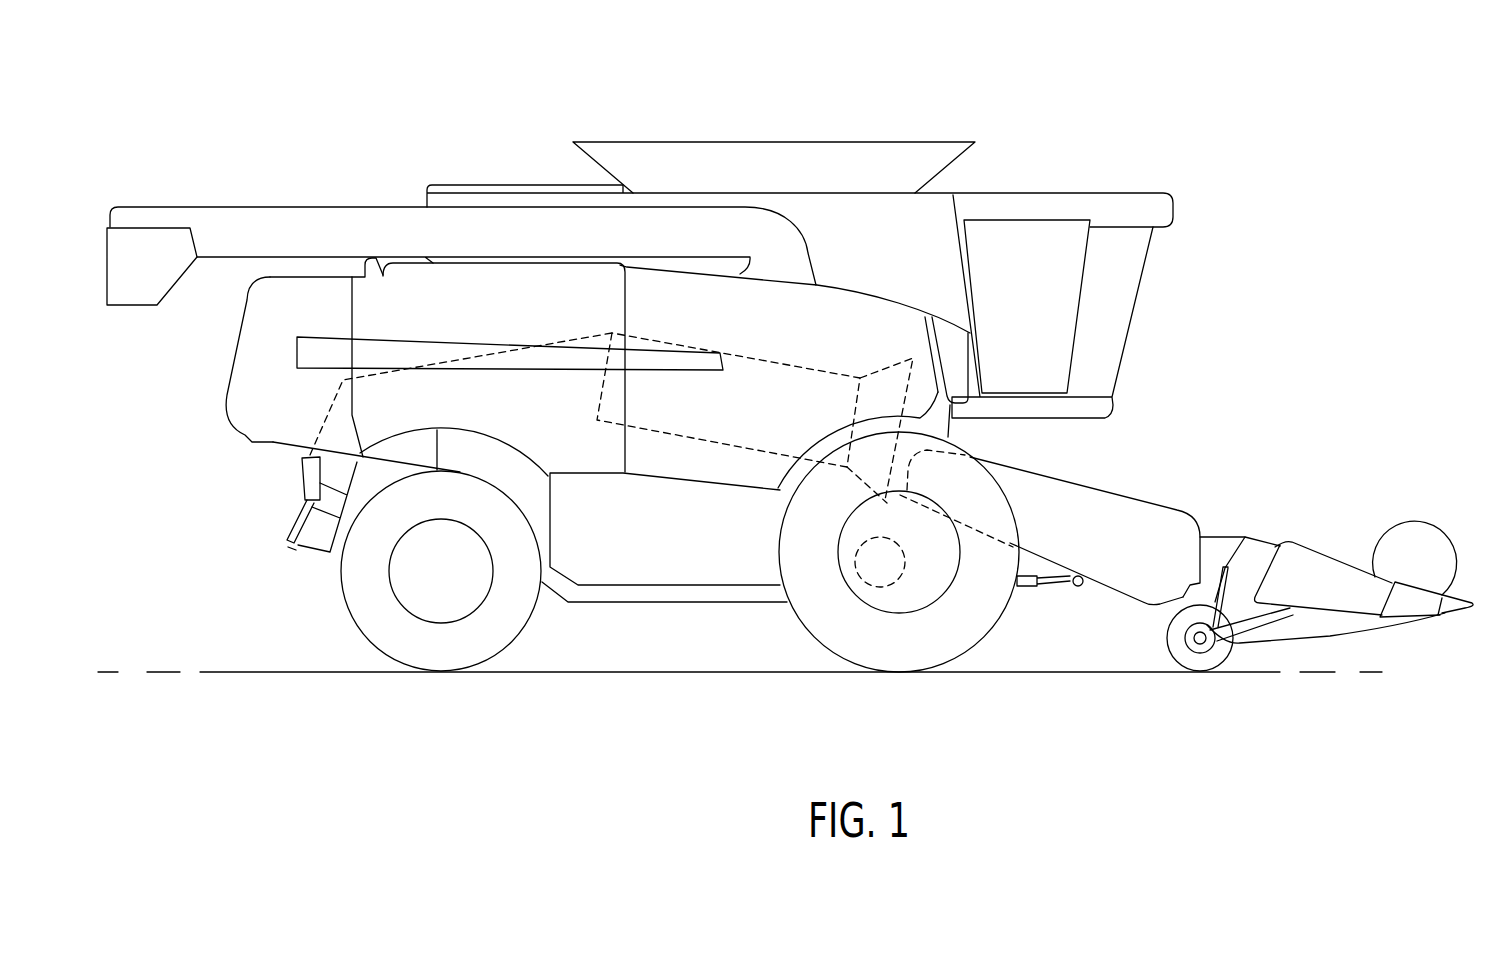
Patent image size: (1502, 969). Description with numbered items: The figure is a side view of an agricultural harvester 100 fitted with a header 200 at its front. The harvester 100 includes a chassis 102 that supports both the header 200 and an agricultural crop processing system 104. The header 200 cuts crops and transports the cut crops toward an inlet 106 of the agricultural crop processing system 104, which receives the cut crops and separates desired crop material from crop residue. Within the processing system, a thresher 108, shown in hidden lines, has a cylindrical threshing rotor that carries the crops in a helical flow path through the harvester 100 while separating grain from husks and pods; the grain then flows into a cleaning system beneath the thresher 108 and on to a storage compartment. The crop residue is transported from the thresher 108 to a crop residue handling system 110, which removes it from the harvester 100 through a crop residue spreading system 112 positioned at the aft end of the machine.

The agricultural harvester 100 is at (1174, 96).
The chassis 102 is at (601, 610).
The agricultural crop processing system 104 is at (763, 330).
The inlet 106 is at (986, 451).
The thresher 108 is at (777, 352).
The crop residue handling system 110 is at (405, 324).
The crop residue spreading system 112 is at (287, 516).
The header 200 is at (1350, 510).